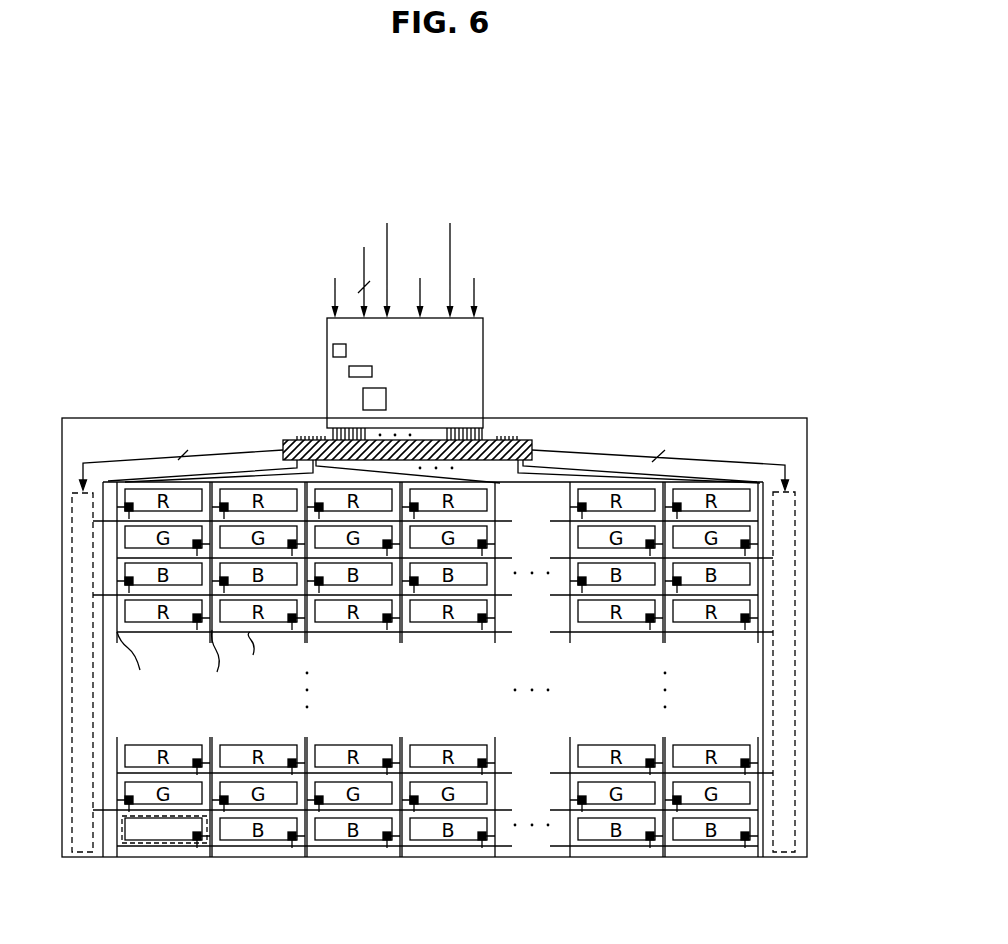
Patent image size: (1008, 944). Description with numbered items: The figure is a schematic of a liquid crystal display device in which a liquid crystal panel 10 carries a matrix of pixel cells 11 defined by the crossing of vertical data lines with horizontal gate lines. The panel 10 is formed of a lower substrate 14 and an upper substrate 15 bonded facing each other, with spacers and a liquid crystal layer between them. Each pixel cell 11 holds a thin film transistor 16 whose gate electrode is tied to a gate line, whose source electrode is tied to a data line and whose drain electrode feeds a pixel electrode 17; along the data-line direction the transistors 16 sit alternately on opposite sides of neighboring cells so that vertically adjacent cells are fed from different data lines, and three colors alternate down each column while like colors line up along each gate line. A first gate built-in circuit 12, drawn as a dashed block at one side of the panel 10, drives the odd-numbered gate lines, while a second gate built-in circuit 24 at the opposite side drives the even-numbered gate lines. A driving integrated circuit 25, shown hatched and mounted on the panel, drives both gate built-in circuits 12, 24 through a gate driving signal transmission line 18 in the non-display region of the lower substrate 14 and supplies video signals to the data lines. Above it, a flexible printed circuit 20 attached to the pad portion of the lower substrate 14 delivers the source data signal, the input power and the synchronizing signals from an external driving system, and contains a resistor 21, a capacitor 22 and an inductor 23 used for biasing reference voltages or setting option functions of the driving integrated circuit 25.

The liquid crystal panel 10 is at (642, 377).
The pixel cell 11 is at (125, 845).
The first gate built-in circuit 12 is at (78, 678).
The lower substrate 14 is at (797, 432).
The upper substrate 15 is at (682, 487).
The thin film transistor 16 is at (197, 843).
The pixel electrode 17 is at (152, 838).
The gate driving signal transmission line 18 is at (120, 462).
The flexible printed circuit 20 is at (483, 339).
The resistor 21 is at (333, 350).
The capacitor 22 is at (349, 372).
The inductor 23 is at (363, 399).
The gate driver 24 is at (797, 653).
The driving integrated circuit 25 is at (522, 452).